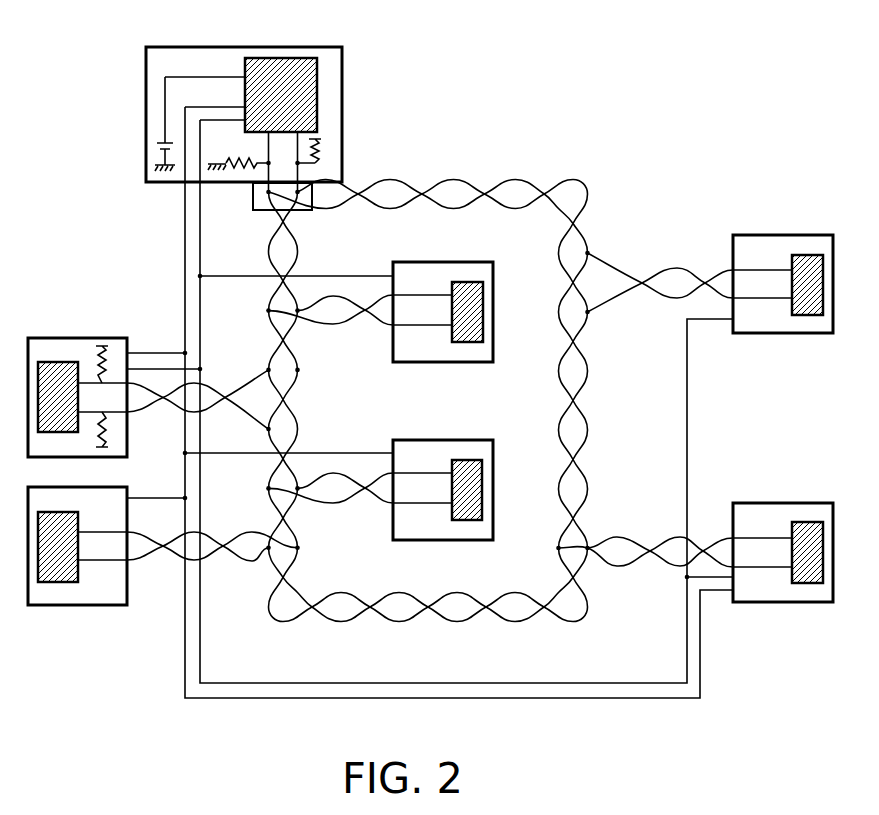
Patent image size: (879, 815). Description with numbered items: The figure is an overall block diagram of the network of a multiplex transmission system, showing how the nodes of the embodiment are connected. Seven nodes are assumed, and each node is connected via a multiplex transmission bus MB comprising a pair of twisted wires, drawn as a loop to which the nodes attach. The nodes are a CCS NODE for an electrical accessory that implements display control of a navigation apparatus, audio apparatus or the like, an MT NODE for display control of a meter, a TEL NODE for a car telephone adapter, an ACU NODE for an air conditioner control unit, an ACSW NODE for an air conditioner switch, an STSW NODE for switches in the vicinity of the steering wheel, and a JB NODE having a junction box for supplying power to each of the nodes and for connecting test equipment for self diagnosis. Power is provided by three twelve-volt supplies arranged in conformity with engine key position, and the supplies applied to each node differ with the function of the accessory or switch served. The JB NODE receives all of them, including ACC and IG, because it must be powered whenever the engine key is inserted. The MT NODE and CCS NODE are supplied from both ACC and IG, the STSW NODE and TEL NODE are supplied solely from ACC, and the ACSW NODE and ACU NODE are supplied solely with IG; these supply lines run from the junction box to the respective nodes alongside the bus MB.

The junction box node JB NODE is at (244, 115).
The IG power supply IG is at (459, 389).
The ACC power supply ACC is at (466, 401).
The multiplex transmission bus MB is at (426, 387).
The steering wheel switch node STSW NODE is at (351, 327).
The air conditioner switch node ACSW NODE is at (345, 505).
The meter node MT NODE is at (164, 411).
The air conditioner control unit node ACU NODE is at (164, 560).
The car telephone adapter node TEL NODE is at (709, 301).
The electrical accessory node CCS NODE is at (694, 570).